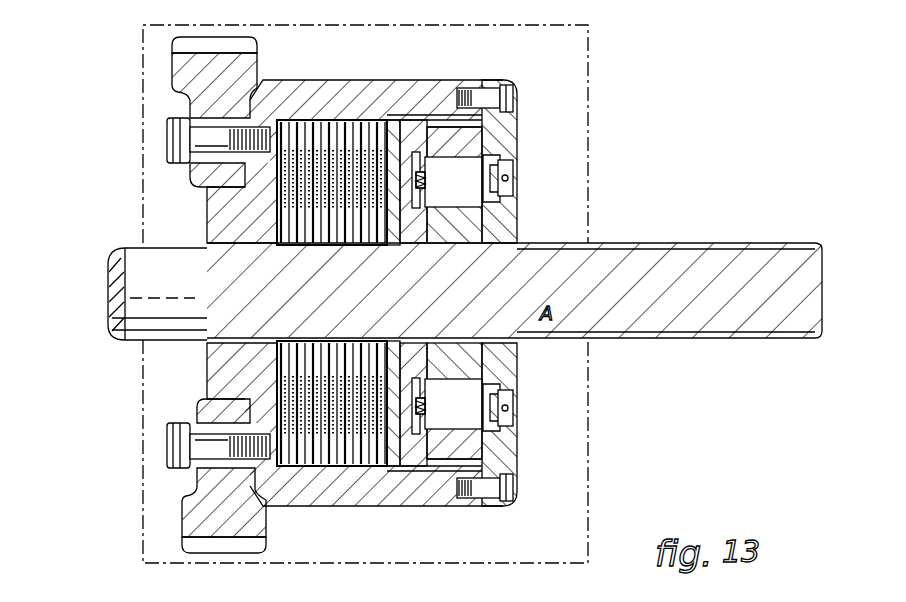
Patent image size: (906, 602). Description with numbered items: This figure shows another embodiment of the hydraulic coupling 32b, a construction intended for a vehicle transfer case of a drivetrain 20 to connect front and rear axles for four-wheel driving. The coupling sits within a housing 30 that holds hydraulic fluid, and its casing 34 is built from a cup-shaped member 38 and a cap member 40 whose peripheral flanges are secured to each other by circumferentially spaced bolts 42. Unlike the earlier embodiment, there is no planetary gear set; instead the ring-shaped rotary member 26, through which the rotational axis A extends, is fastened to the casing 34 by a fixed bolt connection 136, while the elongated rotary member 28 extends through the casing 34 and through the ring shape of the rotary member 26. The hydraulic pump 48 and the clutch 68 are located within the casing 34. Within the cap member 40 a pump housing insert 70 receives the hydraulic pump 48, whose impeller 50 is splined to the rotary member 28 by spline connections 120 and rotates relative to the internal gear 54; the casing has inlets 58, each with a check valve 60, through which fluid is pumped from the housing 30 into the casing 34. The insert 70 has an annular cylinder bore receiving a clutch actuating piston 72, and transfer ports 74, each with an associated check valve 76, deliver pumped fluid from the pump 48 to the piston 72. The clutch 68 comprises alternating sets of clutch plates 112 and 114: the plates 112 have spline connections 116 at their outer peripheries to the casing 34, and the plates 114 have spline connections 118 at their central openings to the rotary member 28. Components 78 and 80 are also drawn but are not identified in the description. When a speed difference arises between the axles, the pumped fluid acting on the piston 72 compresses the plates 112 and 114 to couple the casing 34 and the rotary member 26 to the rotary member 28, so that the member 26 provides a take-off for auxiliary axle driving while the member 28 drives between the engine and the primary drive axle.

The vehicle drivetrain 20 is at (648, 61).
The axle half shaft 26 is at (180, 62).
The axle half shaft 28 is at (713, 258).
The housing 30 is at (592, 122).
The hydraulic coupling 32b is at (186, 377).
The casing 34 is at (370, 79).
The cup-shaped member 38 is at (332, 500).
The cap member 40 is at (516, 140).
The bolts 42 is at (505, 97).
The hydraulic pump 48 is at (515, 436).
The impeller 50 is at (503, 243).
The internal gear 54 is at (483, 140).
The inlet 58 is at (515, 172).
The check valve 60 is at (515, 182).
The clutch 68 is at (380, 480).
The pump housing insert 70 is at (415, 115).
The clutch actuating piston 72 is at (401, 122).
The transfer ports 74 is at (424, 178).
The check valve 76 is at (424, 184).
The separator plate 78 is at (358, 250).
The backing plate 80 is at (396, 250).
The clutch plates 112 is at (297, 135).
The clutch plates 114 is at (290, 253).
The spline connections 116 is at (343, 128).
The spline connections 118 is at (292, 342).
The spline connections 120 is at (455, 252).
The fixed bolt connection 136 is at (172, 140).